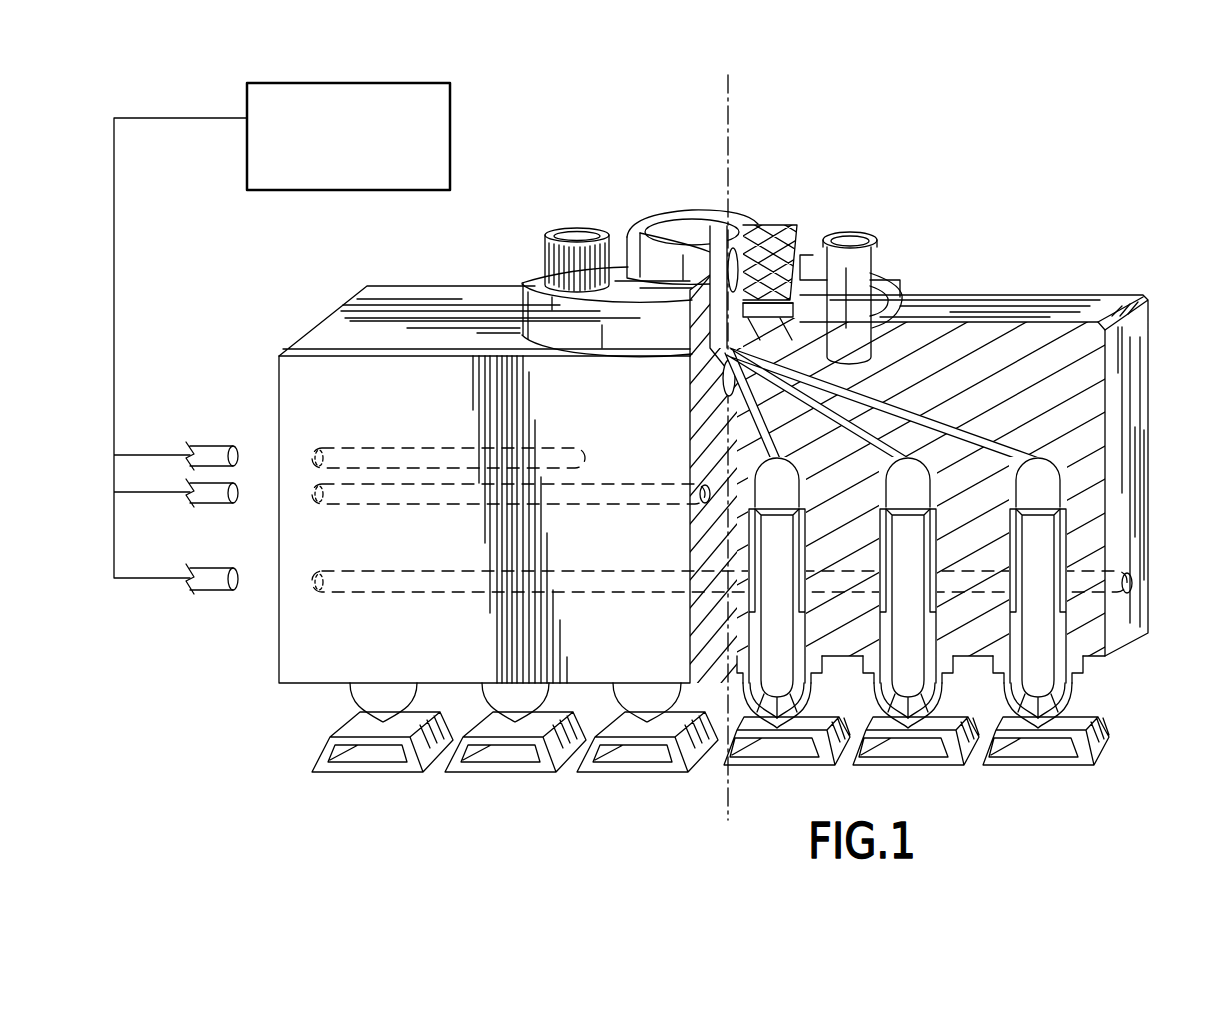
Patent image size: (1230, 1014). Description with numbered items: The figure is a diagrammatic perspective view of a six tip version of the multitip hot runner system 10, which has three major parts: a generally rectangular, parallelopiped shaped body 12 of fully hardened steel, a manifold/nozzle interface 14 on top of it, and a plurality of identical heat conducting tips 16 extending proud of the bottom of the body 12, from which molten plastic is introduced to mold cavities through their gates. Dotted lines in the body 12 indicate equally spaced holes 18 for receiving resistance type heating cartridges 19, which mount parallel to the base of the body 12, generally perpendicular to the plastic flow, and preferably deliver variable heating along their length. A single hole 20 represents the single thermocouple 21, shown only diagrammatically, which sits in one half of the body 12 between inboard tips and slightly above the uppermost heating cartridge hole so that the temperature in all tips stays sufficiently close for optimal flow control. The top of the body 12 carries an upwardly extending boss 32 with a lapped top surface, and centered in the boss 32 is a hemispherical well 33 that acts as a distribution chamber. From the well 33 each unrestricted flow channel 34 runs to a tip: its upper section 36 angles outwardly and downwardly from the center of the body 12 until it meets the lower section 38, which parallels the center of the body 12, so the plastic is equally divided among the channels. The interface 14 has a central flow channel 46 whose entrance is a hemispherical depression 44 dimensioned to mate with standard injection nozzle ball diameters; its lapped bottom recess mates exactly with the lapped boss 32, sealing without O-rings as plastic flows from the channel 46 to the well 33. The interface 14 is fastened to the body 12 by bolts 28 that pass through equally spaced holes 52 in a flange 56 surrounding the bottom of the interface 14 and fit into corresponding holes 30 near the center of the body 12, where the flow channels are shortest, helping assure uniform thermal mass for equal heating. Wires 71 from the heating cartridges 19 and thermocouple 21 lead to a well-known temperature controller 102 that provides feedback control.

The multitip hot runner system 10 is at (747, 498).
The body 12 is at (1066, 293).
The manifold/nozzle interface 14 is at (773, 206).
The heat conducting tips 16 is at (1082, 695).
The heating cartridge holes 18 is at (410, 506).
The heating cartridges 19 is at (215, 495).
The thermocouple hole 20 is at (395, 447).
The thermocouple 21 is at (205, 455).
The bolts 28 is at (575, 232).
The holes 30 is at (878, 310).
The boss 32 is at (790, 272).
The hemispherical well 33 is at (773, 250).
The flow channel 34 is at (955, 430).
The upper section 36 is at (980, 453).
The lower section 38 is at (1043, 483).
The hemispherical depression 44 is at (695, 215).
The central flow channel 46 is at (742, 228).
The holes 52 is at (878, 272).
The flange 56 is at (618, 265).
The wires 71 is at (114, 290).
The temperature controller 102 is at (368, 83).